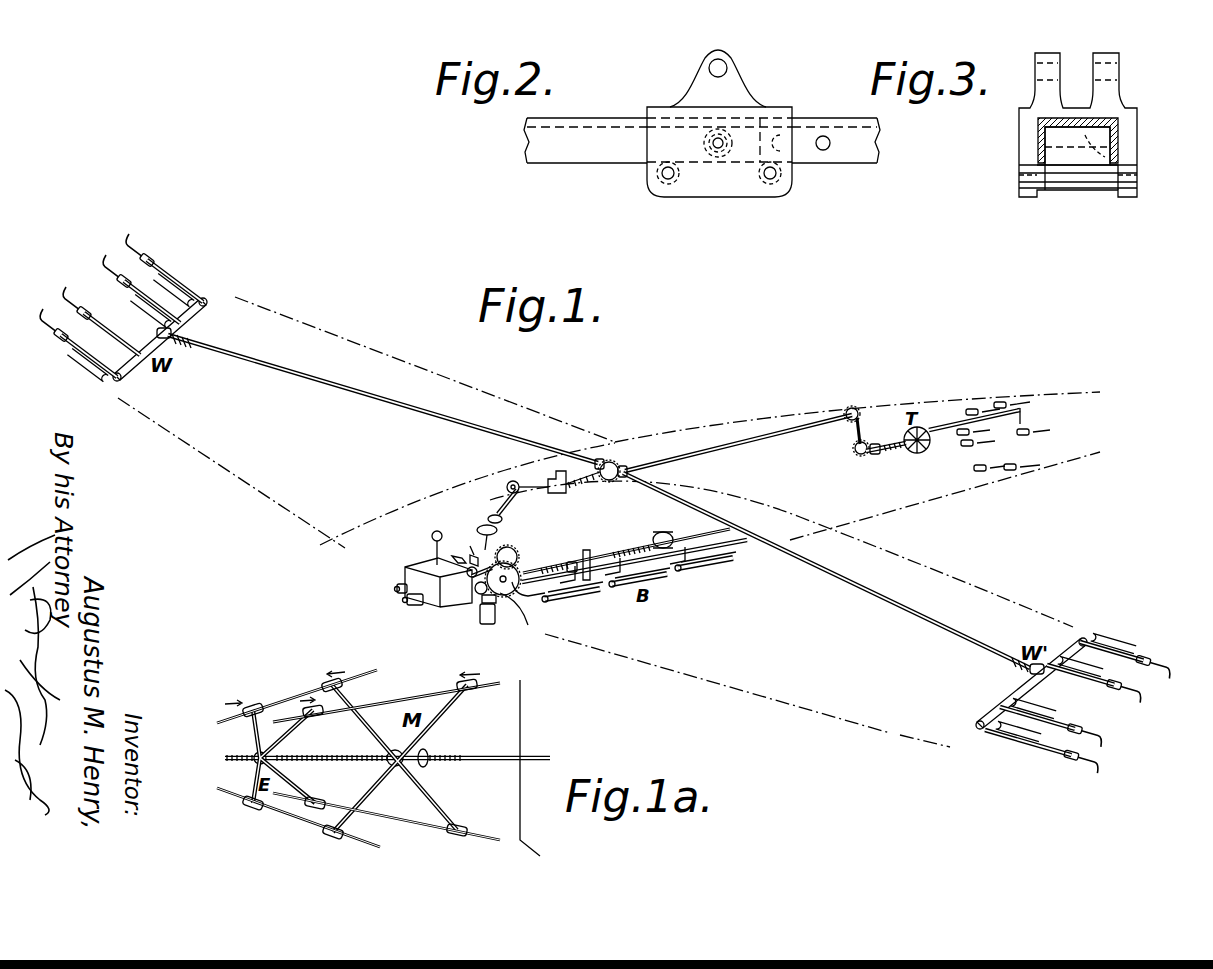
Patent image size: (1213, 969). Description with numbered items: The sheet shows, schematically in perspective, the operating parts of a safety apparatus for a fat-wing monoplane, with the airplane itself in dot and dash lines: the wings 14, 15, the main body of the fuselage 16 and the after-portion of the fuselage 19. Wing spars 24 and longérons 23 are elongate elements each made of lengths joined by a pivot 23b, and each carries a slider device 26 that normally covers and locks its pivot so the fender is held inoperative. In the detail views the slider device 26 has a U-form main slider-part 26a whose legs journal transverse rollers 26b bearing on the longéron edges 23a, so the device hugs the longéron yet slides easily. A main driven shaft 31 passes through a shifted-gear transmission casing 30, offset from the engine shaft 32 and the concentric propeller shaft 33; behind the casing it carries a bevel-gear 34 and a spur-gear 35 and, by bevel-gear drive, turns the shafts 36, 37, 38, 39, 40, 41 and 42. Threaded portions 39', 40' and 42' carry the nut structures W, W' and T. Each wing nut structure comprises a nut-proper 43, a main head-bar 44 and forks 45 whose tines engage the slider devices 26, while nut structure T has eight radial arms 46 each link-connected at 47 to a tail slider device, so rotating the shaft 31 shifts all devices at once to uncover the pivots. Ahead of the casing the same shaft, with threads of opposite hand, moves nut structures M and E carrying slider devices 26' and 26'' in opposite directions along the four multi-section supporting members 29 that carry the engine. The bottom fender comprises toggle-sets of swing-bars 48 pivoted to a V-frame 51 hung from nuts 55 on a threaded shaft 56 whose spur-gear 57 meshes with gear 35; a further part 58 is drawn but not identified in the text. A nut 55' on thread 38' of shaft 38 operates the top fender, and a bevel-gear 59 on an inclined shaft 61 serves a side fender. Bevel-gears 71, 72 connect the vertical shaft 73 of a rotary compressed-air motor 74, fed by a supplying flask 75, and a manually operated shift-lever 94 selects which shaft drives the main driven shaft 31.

In FIG. 1, the wing 14 is at (340, 350).
In FIG. 1, the wing 15 is at (784, 697).
In FIG. 1, the main body of the fuselage 16 is at (795, 413).
In FIG. 1, the after-portion of the fuselage 19 is at (1060, 397).
In FIG. 2, the longéron 23 is at (598, 150).
In FIG. 3, the longéron 23 is at (1045, 130).
In FIG. 1, the longéron 23 is at (110, 270).
In FIG. 3, the longéron edges 23a is at (1040, 185).
In FIG. 2, the longéron pivot 23b is at (725, 160).
In FIG. 3, the longéron pivot 23b is at (1115, 160).
In FIG. 1, the wing spar 24 is at (1000, 400).
In FIG. 2, the slider device 26 is at (719, 123).
In FIG. 3, the slider device 26 is at (1085, 125).
In FIG. 1, the slider device 26 is at (594, 518).
In FIG. 2, the main slider-part 26a is at (770, 118).
In FIG. 3, the main slider-part 26a is at (1030, 120).
In FIG. 2, the transverse rollers 26b is at (658, 193).
In FIG. 3, the transverse rollers 26b is at (1078, 190).
In FIG. 1A, the slider device 26' is at (398, 755).
In FIG. 1A, the slider device 26'' is at (286, 750).
In FIG. 1A, the multi-section supporting member 29 is at (293, 694).
In FIG. 1, the shifted-gear transmission casing 30 is at (422, 565).
In FIG. 1A, the shifted-gear transmission casing 30 is at (520, 788).
In FIG. 1, the main driven shaft 31 is at (466, 565).
In FIG. 1A, the main driven shaft 31 is at (232, 750).
In FIG. 1, the engine shaft 32 is at (400, 595).
In FIG. 1, the propeller shaft 33 is at (413, 608).
In FIG. 1, the bevel-gear 34 is at (469, 552).
In FIG. 1, the spur-gear 35 is at (514, 549).
In FIG. 1, the shaft 36 is at (500, 532).
In FIG. 1, the shaft 37 is at (513, 480).
In FIG. 1, the shaft 38 is at (738, 431).
In FIG. 1, the thread 38' is at (621, 445).
In FIG. 1, the shaft 39 is at (383, 399).
In FIG. 1, the threaded portion 39' is at (190, 364).
In FIG. 1, the shaft 40 is at (826, 570).
In FIG. 1, the threaded portion 40' is at (994, 675).
In FIG. 1, the shaft 41 is at (850, 432).
In FIG. 1, the shaft 42 is at (884, 468).
In FIG. 1, the threaded portion 42' is at (888, 415).
In FIG. 1, the nut-proper 43 is at (174, 334).
In FIG. 1, the main head-bar 44 is at (133, 368).
In FIG. 1, the fork 45 is at (158, 300).
In FIG. 1, the radially arranged arm 46 is at (915, 455).
In FIG. 1, the link connection 47 is at (940, 428).
In FIG. 1, the swing-bar 48 is at (592, 603).
In FIG. 1, the V-frame 51 is at (700, 578).
In FIG. 1, the nut 55 is at (626, 534).
In FIG. 1, the nut 55' is at (579, 446).
In FIG. 1, the threaded shaft 56 is at (660, 533).
In FIG. 1, the spur-gear 57 is at (520, 570).
In FIG. 1, the slide bar 58 is at (720, 566).
In FIG. 1, the bevel-gear 59 is at (503, 508).
In FIG. 1, the rearwardly inclined shaft 61 is at (455, 553).
In FIG. 1, the bevel-gear 71 is at (454, 592).
In FIG. 1, the bevel-gear 72 is at (528, 625).
In FIG. 1, the vertical shaft 73 is at (480, 600).
In FIG. 1, the rotary compressed-air motor 74 is at (487, 626).
In FIG. 1, the supplying flask 75 is at (532, 594).
In FIG. 1, the shift-lever 94 is at (433, 545).